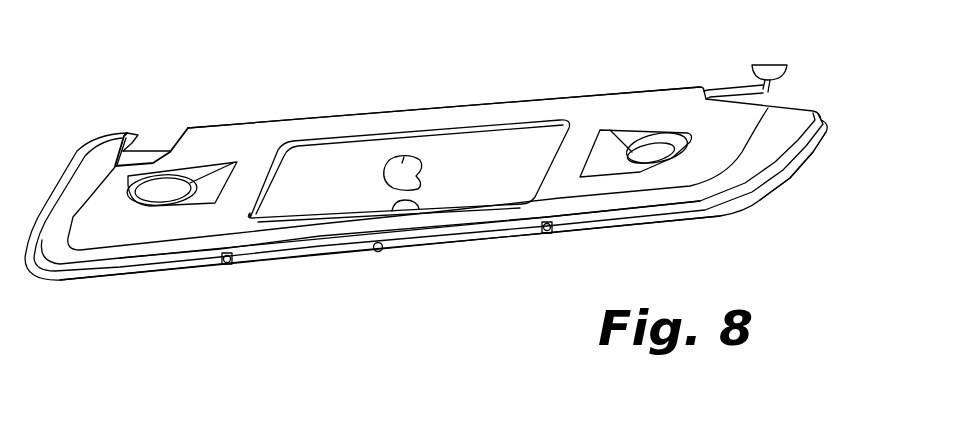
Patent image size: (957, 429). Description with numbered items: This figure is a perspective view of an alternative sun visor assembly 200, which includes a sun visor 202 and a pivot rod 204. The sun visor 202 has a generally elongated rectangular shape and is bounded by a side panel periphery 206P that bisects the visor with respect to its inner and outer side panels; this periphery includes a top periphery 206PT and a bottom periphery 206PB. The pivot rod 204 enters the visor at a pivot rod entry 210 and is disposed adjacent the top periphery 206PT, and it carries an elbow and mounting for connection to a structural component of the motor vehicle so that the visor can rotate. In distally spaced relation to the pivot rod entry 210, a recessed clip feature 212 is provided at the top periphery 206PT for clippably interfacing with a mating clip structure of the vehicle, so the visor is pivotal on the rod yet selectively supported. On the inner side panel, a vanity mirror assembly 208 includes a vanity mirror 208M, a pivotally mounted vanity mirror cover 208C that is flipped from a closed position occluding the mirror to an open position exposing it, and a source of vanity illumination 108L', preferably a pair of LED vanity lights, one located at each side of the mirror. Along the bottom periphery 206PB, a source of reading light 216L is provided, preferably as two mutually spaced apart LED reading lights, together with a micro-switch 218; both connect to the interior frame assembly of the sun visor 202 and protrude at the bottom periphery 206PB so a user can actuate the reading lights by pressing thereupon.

The sun visor assembly 200 is at (432, 90).
The sun visor 202 is at (345, 110).
The pivot rod 204 is at (774, 105).
The side panel periphery 206P is at (788, 163).
The bottom periphery 206PB is at (110, 272).
The top periphery 206PT is at (302, 117).
The vanity mirror assembly 208 is at (465, 232).
The vanity mirror cover 208C is at (303, 197).
The vanity mirror 208M is at (405, 180).
The pivot rod entry 210 is at (706, 90).
The recessed clip feature 212 is at (153, 138).
The source of reading light 216L is at (232, 264).
The micro-switch 218 is at (378, 252).
The source of vanity illumination 108L' is at (409, 125).